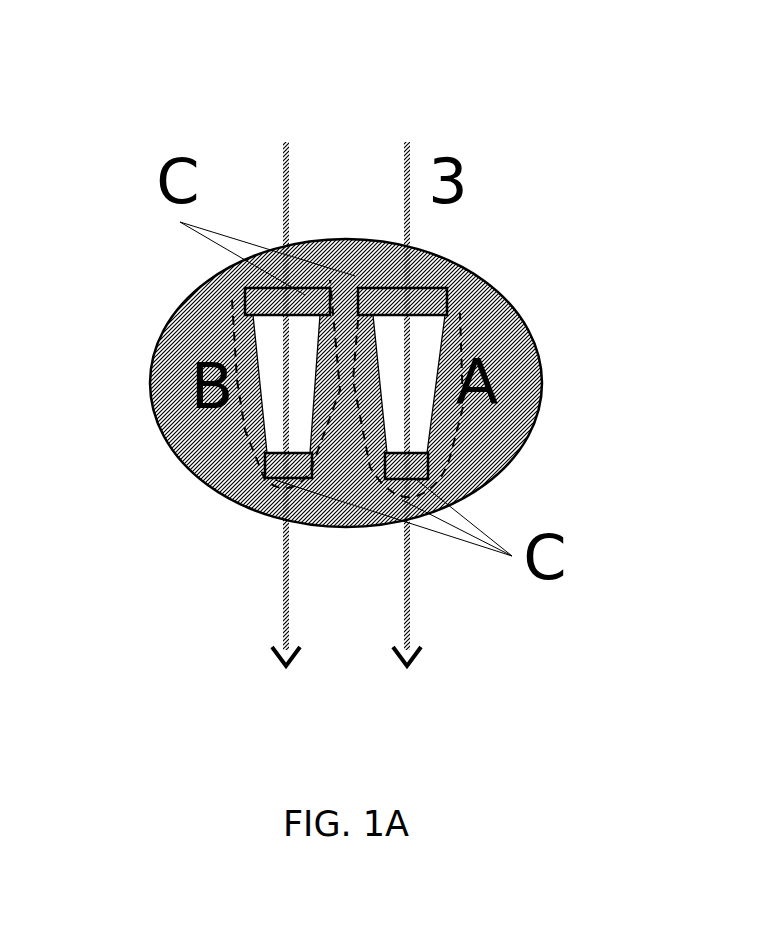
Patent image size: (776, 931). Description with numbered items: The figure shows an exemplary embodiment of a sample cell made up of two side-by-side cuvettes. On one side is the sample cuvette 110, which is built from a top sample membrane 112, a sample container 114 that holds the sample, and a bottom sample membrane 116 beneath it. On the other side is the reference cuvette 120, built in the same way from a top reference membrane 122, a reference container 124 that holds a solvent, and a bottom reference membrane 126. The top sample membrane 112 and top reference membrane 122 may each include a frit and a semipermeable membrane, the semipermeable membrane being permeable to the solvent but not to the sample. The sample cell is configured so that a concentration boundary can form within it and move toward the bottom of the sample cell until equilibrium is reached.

The sample cuvette 110 is at (432, 253).
The top sample membrane 112 is at (430, 293).
The sample container 114 is at (415, 358).
The bottom sample membrane 116 is at (410, 466).
The reference cuvette 120 is at (240, 340).
The top reference membrane 122 is at (310, 292).
The reference container 124 is at (270, 380).
The bottom reference membrane 126 is at (290, 470).